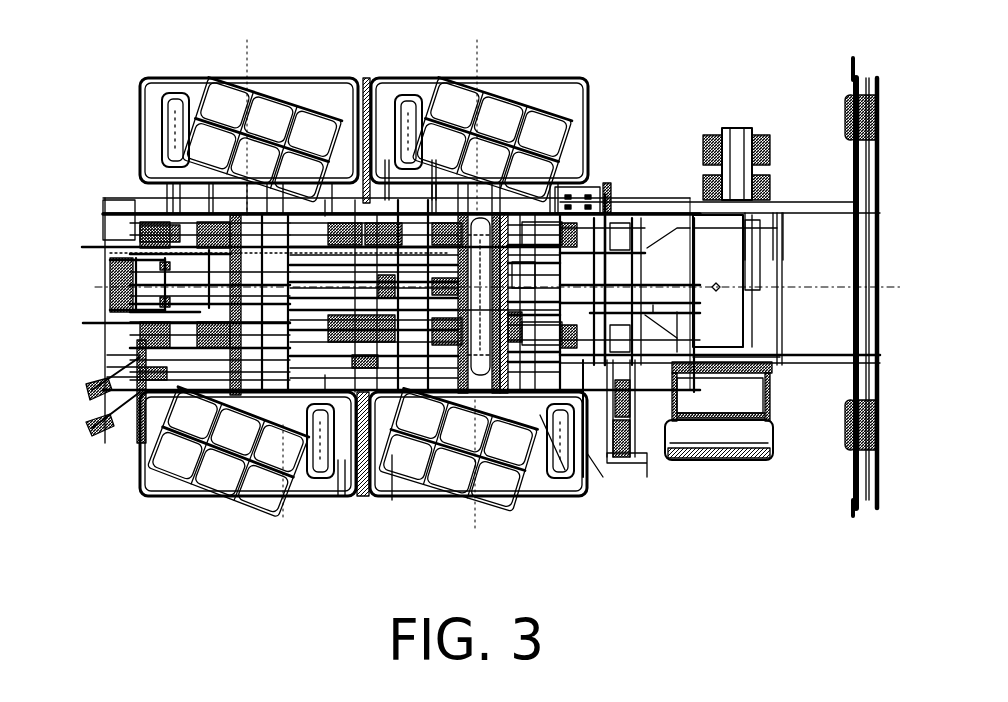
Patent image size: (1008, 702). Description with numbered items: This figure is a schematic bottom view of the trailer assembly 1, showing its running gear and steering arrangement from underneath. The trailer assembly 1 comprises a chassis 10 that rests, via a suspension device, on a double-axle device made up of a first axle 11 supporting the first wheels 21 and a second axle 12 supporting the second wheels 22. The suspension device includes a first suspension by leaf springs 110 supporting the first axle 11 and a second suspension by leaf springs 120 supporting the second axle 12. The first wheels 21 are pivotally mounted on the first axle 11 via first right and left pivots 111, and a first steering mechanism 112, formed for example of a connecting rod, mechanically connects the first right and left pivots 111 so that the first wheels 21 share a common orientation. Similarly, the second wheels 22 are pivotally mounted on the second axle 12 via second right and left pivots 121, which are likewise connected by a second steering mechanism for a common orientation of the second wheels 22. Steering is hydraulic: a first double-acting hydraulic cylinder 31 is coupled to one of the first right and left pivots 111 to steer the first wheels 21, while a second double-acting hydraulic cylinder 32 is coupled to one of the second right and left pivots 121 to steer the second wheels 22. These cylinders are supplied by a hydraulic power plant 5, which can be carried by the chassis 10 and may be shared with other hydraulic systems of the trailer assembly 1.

The trailer assembly 1 is at (733, 60).
The hydraulic power plant 5 is at (733, 426).
The chassis 10 is at (650, 167).
The first axle 11 is at (95, 247).
The second axle 12 is at (385, 168).
The first wheels 21 is at (211, 66).
The second wheels 22 is at (443, 70).
The first double-acting hydraulic cylinder 31 is at (110, 285).
The second double-acting hydraulic cylinder 32 is at (587, 134).
The first suspension by leaf springs 110 is at (395, 500).
The first right and left pivots 111 is at (208, 178).
The first steering mechanism 112 is at (338, 470).
The second suspension by leaf springs 120 is at (566, 422).
The second right and left pivots 121 is at (433, 165).